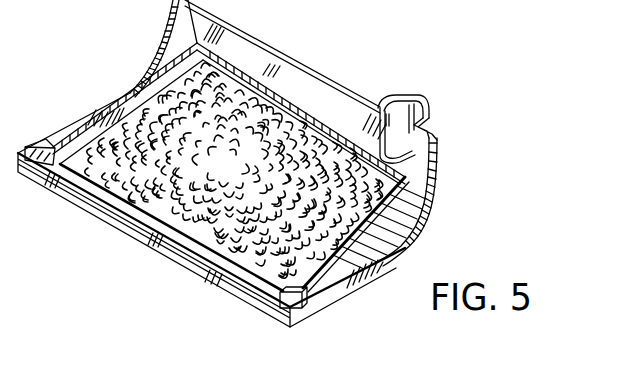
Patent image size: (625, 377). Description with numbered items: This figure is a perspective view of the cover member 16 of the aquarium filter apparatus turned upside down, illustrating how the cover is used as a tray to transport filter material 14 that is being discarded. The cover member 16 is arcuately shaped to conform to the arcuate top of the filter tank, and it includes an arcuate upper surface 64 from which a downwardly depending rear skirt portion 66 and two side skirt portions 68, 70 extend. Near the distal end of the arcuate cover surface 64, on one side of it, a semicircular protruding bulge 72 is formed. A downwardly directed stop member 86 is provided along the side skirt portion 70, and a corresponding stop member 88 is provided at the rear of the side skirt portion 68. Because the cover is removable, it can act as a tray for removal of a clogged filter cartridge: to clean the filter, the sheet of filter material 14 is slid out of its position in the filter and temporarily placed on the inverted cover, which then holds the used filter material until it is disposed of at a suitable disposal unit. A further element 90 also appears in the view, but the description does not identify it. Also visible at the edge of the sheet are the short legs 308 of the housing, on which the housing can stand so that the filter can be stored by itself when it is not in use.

The filter material 14 is at (213, 101).
The cover member 16 is at (124, 249).
The arcuate upper surface 64 is at (77, 143).
The rear skirt portion 66 is at (200, 271).
The side skirt portion 68 is at (381, 268).
The side skirt portion 70 is at (118, 98).
The semicircular protruding bulge 72 is at (418, 99).
The stop member 86 is at (50, 143).
The stop member 88 is at (316, 293).
The back wall 90 is at (344, 86).
The short legs 308 is at (322, 0).